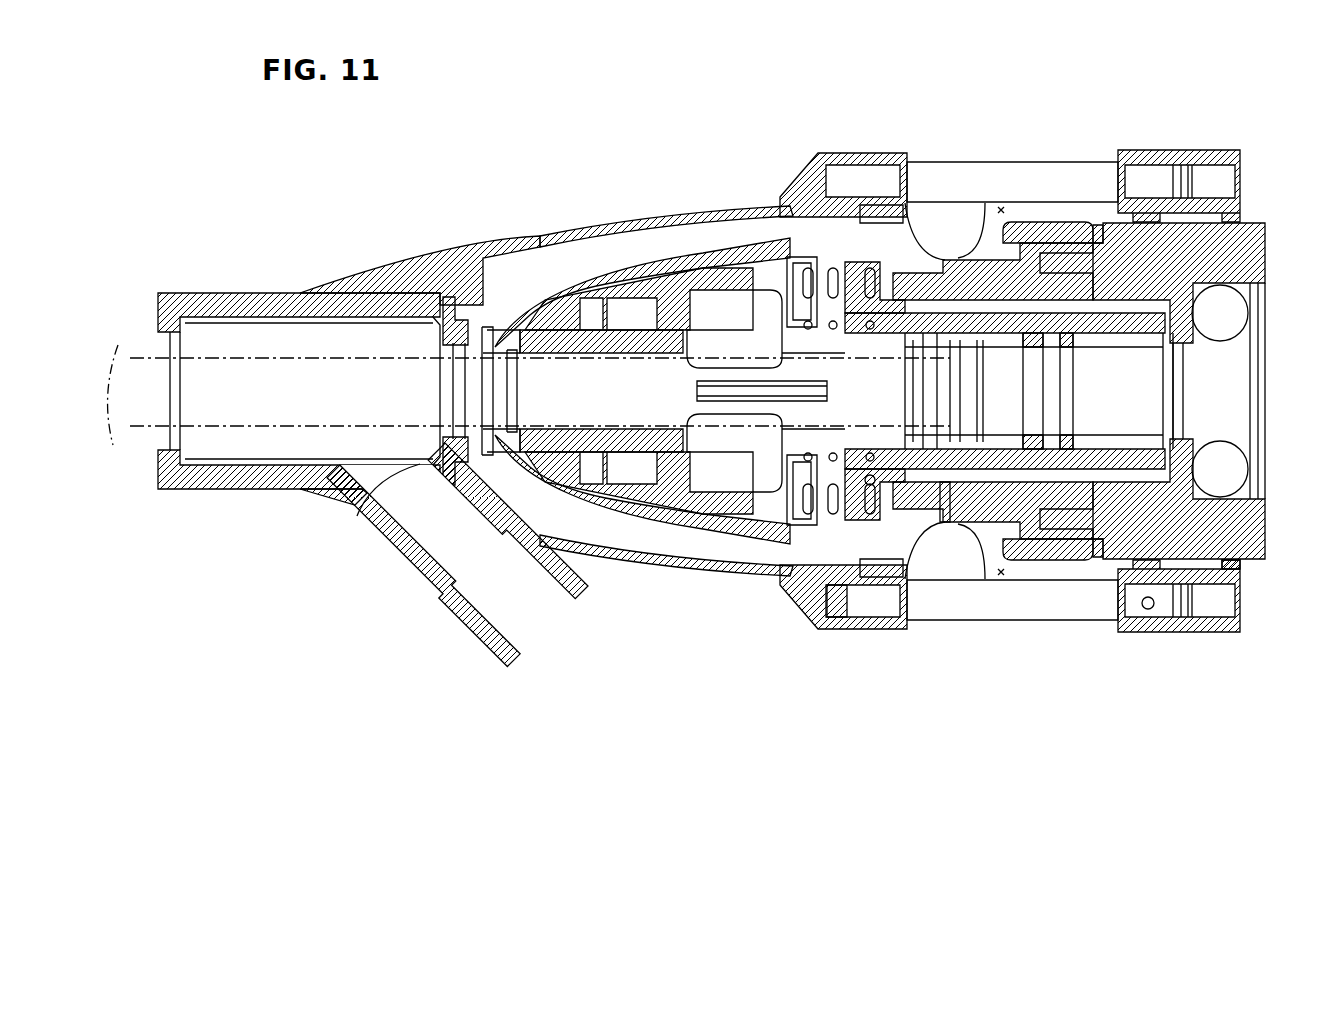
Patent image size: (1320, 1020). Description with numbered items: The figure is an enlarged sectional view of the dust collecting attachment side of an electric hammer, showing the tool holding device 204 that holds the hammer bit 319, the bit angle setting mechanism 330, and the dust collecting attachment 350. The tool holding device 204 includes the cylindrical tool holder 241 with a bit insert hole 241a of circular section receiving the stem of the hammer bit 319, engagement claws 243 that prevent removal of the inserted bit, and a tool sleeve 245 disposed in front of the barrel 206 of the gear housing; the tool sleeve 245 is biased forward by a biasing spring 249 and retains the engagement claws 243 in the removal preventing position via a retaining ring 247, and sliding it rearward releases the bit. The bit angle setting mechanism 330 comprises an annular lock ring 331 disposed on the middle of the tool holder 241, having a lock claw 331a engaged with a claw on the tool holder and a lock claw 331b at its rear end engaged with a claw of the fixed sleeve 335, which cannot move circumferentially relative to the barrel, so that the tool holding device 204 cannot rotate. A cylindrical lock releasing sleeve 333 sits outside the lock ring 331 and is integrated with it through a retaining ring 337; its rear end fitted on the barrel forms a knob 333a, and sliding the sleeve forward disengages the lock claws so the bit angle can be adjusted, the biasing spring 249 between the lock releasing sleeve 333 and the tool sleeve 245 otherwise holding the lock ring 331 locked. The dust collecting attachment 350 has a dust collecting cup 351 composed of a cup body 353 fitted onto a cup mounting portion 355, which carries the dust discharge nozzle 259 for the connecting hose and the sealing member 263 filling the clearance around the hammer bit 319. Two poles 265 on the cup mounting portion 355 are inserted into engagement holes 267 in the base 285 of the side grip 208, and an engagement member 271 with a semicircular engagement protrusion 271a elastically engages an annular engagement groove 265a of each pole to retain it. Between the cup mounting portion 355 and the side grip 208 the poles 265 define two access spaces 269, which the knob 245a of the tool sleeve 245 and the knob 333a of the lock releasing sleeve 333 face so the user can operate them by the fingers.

The tool holding device 204 is at (680, 263).
The barrel 206 is at (1260, 220).
The side grip 208 is at (1210, 146).
The tool holder 241 is at (625, 330).
The bit insert hole 241a is at (540, 345).
The engagement claws 243 is at (768, 300).
The tool sleeve 245 is at (885, 300).
The knob 245a is at (950, 302).
The retaining ring 247 is at (712, 290).
The biasing spring 249 is at (813, 268).
The dust discharge nozzle 259 is at (457, 613).
The sealing member 263 is at (375, 502).
The poles 265 is at (1032, 168).
The engagement groove 265a is at (1236, 610).
The engagement holes 267 is at (1146, 606).
The access spaces 269 is at (1002, 206).
The engagement member 271 is at (1162, 620).
The engagement protrusion 271a is at (1183, 614).
The base 285 is at (1230, 605).
The hammer bit 319 is at (132, 355).
The bit angle setting mechanism 330 is at (906, 262).
The lock ring 331 is at (910, 512).
The lock claw 331a is at (835, 460).
The lock claw 331b is at (946, 524).
The lock releasing sleeve 333 is at (990, 290).
The knob 333a is at (1062, 224).
The fixed sleeve 335 is at (1100, 226).
The retaining ring 337 is at (868, 486).
The dust collecting attachment 350 is at (416, 572).
The dust collecting cup 351 is at (378, 258).
The cup body 353 is at (228, 292).
The cup mounting portion 355 is at (560, 235).